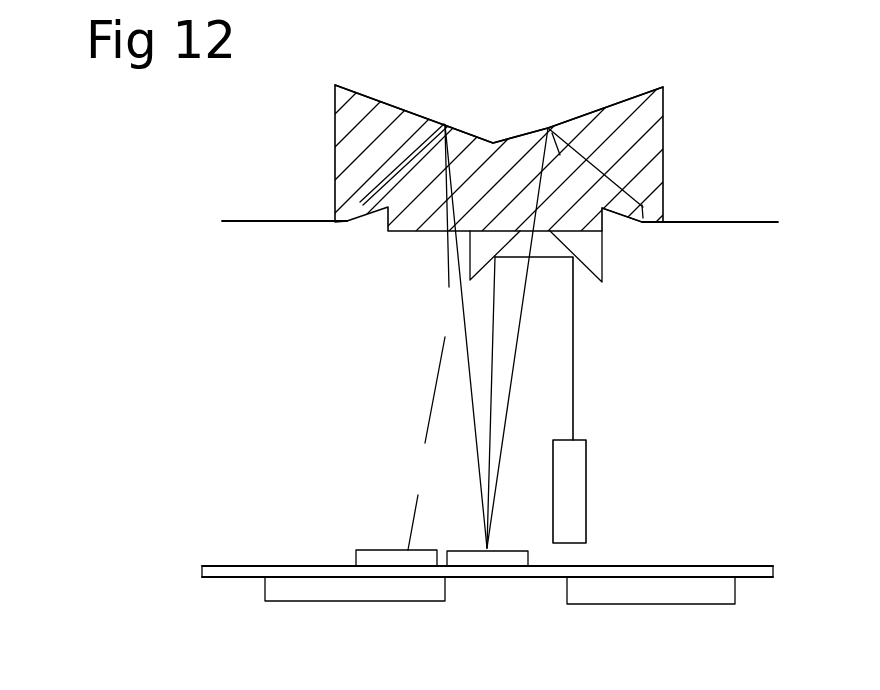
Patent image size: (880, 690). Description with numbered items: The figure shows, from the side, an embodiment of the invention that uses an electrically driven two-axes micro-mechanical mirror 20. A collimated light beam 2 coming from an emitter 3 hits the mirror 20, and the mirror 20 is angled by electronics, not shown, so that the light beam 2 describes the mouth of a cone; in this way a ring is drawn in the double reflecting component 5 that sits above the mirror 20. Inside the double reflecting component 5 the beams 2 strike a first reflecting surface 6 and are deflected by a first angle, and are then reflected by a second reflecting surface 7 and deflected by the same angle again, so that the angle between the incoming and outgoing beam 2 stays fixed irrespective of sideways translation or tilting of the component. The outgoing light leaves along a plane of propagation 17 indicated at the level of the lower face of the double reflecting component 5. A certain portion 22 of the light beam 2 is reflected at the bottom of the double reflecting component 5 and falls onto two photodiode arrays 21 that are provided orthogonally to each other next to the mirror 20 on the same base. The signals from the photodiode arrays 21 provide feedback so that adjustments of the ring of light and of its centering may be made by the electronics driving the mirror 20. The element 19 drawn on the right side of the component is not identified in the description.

The light beam 2 is at (575, 353).
The emitter 3 is at (588, 453).
The double reflecting component 5 is at (663, 105).
The first reflecting surface 6 is at (602, 75).
The second reflecting surface 7 is at (617, 215).
The plane of propagation 17 is at (727, 215).
The support wedge 19 is at (602, 268).
The two-axes micro-mechanical mirror 20 is at (512, 553).
The photodiode arrays 21 is at (370, 548).
The portion of the light beam 22 is at (430, 420).